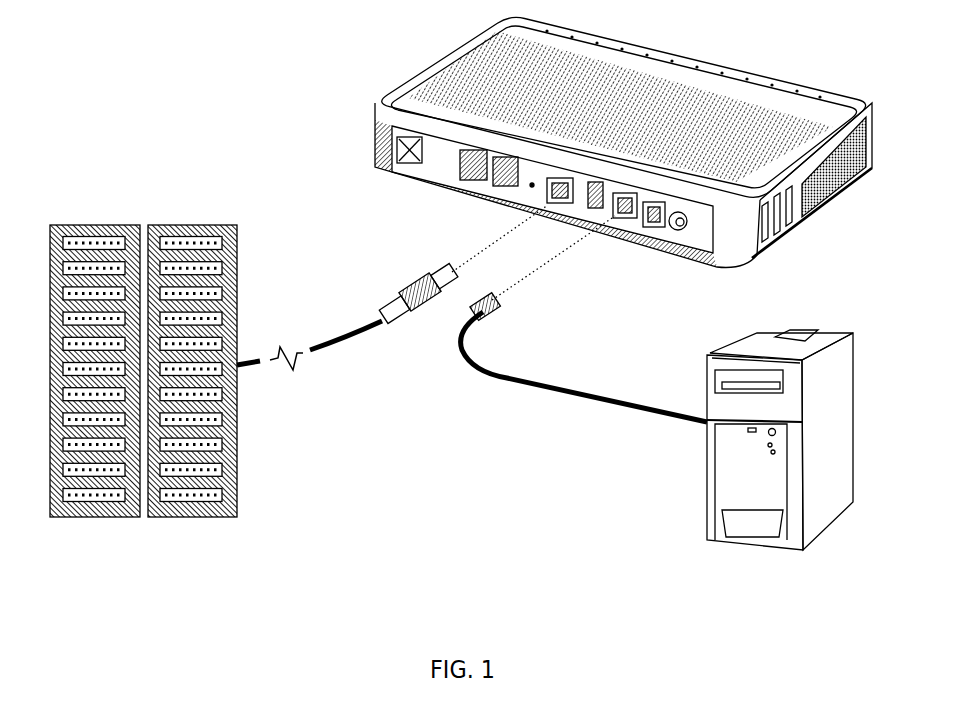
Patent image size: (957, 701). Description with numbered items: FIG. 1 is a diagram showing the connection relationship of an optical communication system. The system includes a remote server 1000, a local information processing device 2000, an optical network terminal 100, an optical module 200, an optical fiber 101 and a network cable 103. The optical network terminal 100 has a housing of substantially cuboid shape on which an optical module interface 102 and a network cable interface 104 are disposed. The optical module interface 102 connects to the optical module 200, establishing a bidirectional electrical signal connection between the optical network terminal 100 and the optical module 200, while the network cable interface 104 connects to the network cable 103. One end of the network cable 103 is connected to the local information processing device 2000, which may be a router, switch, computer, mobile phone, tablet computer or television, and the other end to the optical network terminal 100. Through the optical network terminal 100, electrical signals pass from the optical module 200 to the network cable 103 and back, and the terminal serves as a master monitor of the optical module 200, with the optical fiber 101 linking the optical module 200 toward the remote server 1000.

The optical network terminal 100 is at (587, 169).
The remote server 1000 is at (213, 220).
The optical fiber 101 is at (352, 340).
The optical module 200 is at (433, 273).
The optical module interface 102 is at (558, 195).
The network cable 103 is at (507, 377).
The network cable interface 104 is at (623, 203).
The local information processing device 2000 is at (712, 470).